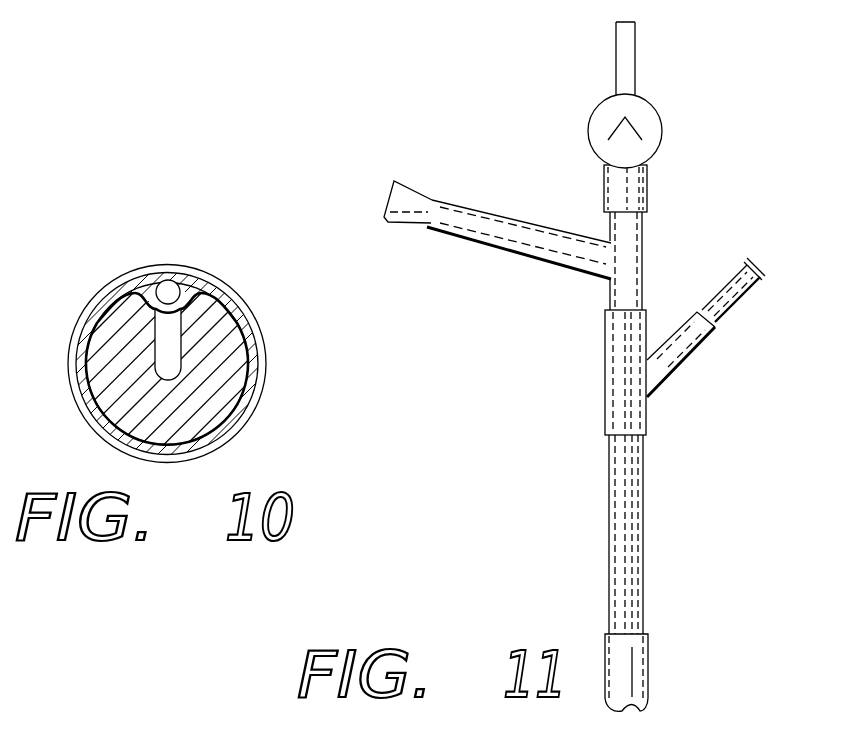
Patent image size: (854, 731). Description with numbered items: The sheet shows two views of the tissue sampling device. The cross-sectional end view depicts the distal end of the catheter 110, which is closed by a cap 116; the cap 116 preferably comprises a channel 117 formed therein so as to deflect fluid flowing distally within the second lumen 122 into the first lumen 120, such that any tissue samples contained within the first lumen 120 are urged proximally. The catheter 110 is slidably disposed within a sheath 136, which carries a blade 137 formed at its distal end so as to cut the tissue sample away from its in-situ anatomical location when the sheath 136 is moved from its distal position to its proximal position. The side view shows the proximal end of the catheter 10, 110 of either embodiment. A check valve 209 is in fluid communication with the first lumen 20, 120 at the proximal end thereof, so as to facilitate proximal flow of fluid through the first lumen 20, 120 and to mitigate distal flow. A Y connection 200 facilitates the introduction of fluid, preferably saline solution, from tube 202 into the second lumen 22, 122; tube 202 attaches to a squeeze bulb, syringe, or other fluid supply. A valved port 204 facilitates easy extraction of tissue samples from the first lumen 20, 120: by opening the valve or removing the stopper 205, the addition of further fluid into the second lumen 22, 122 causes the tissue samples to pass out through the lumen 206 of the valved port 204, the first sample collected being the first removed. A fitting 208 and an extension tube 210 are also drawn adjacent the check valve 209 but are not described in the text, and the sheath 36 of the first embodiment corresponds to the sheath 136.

In FIG. 11, the catheter 10 is at (684, 534).
In FIG. 11, the catheter 110 is at (643, 471).
In FIG. 11, the first lumen 20 is at (685, 261).
In FIG. 11, the first lumen 120 is at (644, 250).
In FIG. 11, the second lumen 22 is at (688, 534).
In FIG. 10, the second lumen 122 is at (168, 288).
In FIG. 11, the second lumen 122 is at (638, 536).
In FIG. 11, the sheath 36 is at (685, 672).
In FIG. 11, the sheath 136 is at (648, 649).
In FIG. 10, the cap 116 is at (224, 364).
In FIG. 10, the channel 117 is at (160, 332).
In FIG. 10, the blade 137 is at (248, 422).
In FIG. 11, the Y connection 200 is at (605, 423).
In FIG. 11, the tube 202 is at (738, 299).
In FIG. 11, the valved port 204 is at (477, 242).
In FIG. 11, the stopper 205 is at (412, 174).
In FIG. 11, the lumen 206 is at (492, 227).
In FIG. 11, the connector fitting 208 is at (648, 183).
In FIG. 11, the check valve 209 is at (590, 123).
In FIG. 11, the extension tube 210 is at (618, 53).